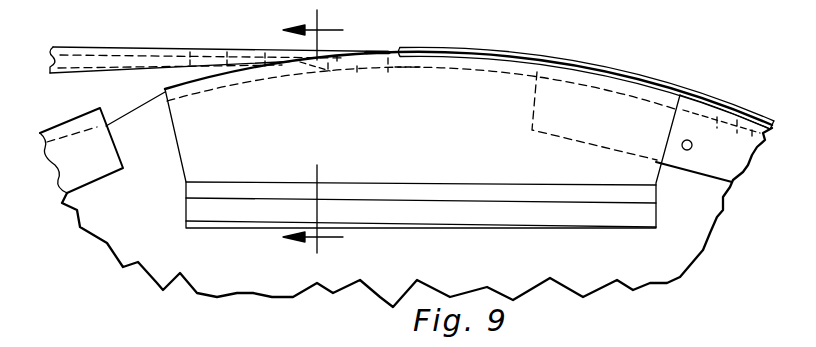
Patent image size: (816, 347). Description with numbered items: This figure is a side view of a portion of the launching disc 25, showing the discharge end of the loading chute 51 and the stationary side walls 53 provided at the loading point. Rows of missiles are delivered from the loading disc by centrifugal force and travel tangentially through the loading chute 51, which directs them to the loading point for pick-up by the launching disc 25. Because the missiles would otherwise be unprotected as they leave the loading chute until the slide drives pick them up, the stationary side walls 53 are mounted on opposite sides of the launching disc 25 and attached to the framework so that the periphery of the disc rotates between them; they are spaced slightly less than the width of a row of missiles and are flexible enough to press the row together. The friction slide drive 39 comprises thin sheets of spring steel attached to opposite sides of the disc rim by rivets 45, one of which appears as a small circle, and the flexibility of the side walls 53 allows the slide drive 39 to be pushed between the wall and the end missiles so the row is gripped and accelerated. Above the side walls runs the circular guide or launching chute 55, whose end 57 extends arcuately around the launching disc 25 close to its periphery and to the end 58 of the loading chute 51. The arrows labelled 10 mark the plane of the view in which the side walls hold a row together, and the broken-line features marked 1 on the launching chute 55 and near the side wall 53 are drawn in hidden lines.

The hidden fastening element 1 is at (400, 45).
The section line 10 is at (318, 135).
The launching disc 25 is at (446, 265).
The friction slide drive 39 is at (70, 165).
The rivets 45 is at (692, 145).
The loading chute 51 is at (155, 56).
The stationary side walls 53 is at (428, 151).
The circular guide 55 is at (678, 90).
The end of launching chute 57 is at (430, 50).
The end of loading chute 58 is at (357, 50).